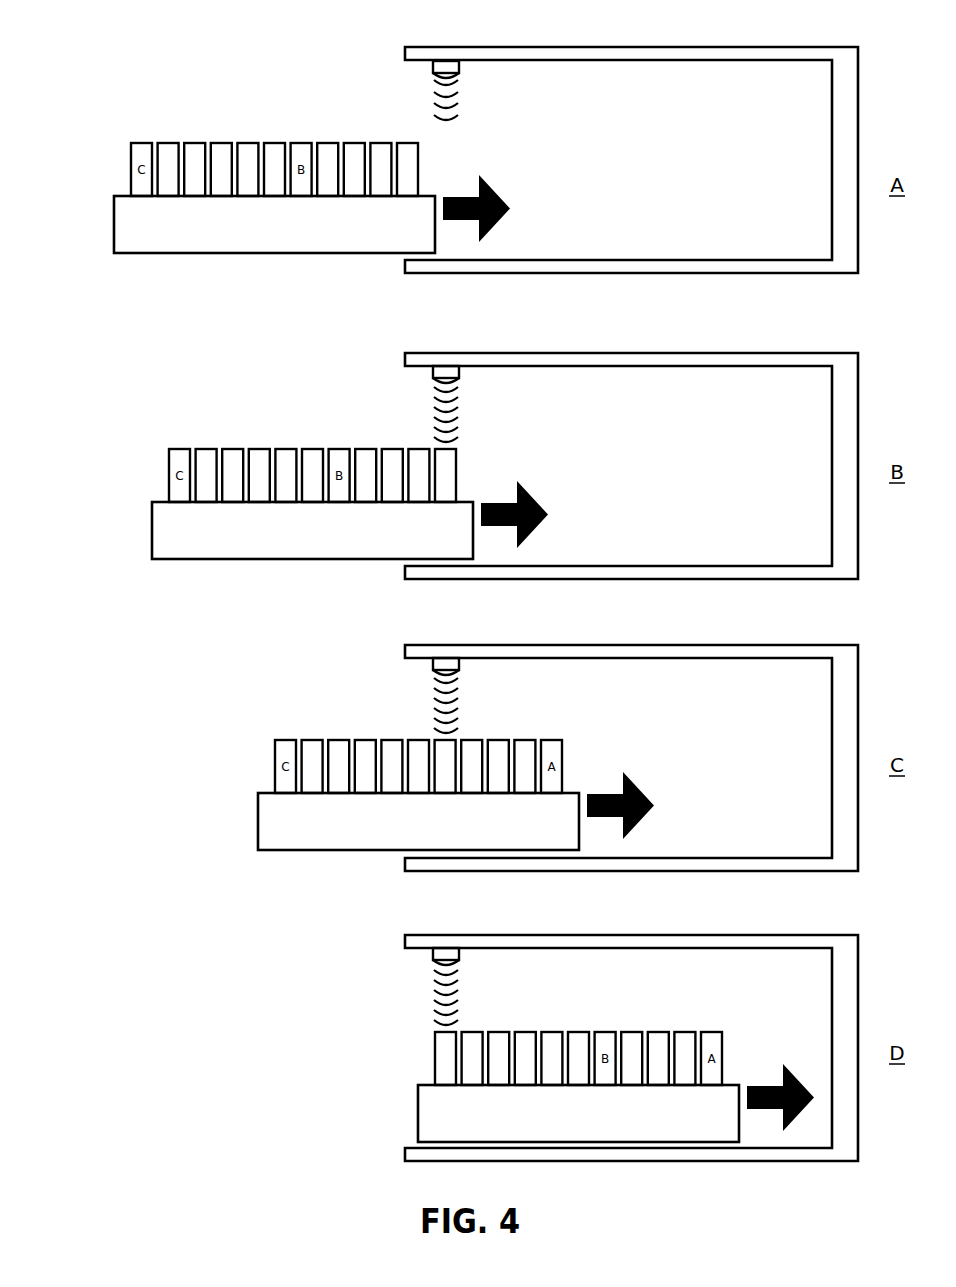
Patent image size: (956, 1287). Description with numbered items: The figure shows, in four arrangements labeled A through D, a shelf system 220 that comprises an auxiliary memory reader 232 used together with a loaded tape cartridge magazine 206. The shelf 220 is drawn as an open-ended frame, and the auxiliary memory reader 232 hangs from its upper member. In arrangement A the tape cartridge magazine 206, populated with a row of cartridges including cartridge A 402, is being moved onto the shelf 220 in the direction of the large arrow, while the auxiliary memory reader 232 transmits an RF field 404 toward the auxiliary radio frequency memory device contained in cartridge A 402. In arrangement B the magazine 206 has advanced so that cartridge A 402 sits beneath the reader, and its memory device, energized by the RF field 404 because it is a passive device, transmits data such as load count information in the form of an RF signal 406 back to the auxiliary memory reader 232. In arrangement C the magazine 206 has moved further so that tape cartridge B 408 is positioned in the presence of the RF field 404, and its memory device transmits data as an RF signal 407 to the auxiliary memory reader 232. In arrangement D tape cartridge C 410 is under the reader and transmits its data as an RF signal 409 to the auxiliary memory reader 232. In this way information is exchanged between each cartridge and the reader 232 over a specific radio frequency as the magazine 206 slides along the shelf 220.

The tape cartridge magazine 206 is at (112, 237).
The shelf system 220 is at (420, 274).
The auxiliary memory reader 232 is at (459, 67).
The cartridge A 402 is at (408, 143).
The RF field 404 is at (414, 81).
The RF signal 406 is at (418, 432).
The RF signal 407 is at (418, 723).
The tape cartridge B 408 is at (453, 775).
The RF signal 409 is at (418, 1012).
The tape cartridge C 410 is at (433, 1045).